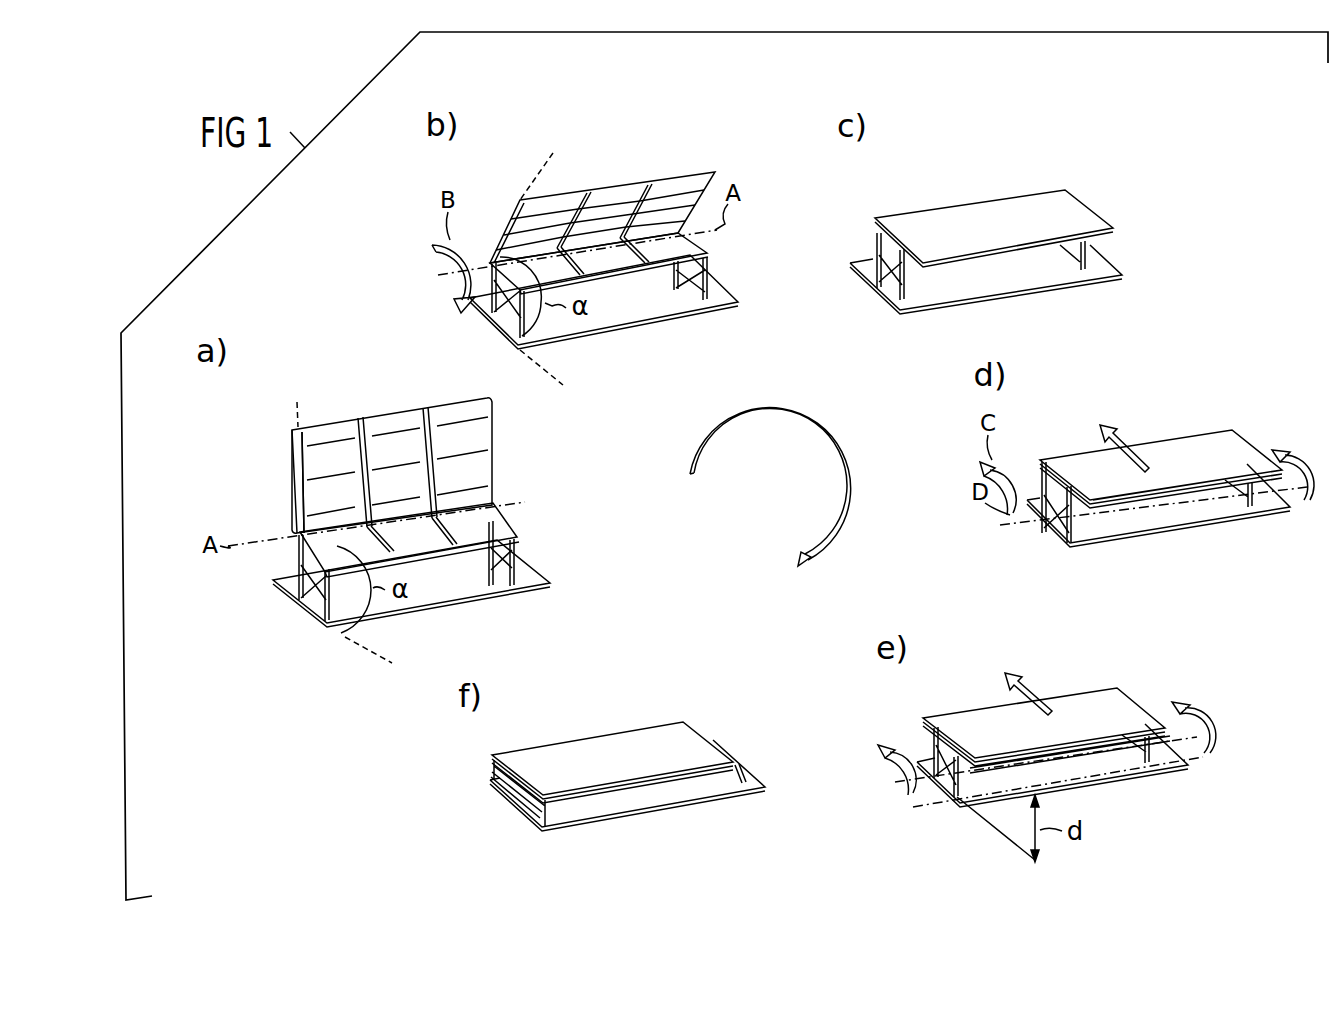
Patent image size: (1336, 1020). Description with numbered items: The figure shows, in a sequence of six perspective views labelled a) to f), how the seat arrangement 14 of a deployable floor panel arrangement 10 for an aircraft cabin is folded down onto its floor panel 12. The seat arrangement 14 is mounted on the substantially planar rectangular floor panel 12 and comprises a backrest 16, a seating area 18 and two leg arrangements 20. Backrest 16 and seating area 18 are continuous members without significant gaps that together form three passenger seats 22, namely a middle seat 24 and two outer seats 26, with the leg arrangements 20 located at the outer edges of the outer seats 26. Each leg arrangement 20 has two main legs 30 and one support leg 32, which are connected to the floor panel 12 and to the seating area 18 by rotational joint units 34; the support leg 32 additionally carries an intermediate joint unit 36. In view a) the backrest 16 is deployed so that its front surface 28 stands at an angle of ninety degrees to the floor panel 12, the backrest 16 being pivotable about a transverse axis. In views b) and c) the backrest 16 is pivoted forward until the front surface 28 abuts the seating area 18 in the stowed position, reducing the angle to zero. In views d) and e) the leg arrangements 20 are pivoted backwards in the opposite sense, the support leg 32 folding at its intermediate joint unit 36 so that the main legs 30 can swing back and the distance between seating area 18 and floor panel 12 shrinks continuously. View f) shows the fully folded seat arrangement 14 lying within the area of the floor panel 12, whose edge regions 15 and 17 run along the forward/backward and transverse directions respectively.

The deployable floor panel arrangement 10 is at (510, 477).
The floor panel 12 is at (540, 576).
The seat arrangement 14 is at (503, 427).
The edge region 15 is at (745, 774).
The backrest 16 is at (322, 412).
The edge region 17 is at (493, 771).
The seating area 18 is at (625, 262).
The leg arrangement 20 is at (272, 591).
The passenger seat 22 is at (375, 402).
The middle seat 24 is at (408, 447).
The outer seat 26 is at (352, 425).
The front surface 28 is at (298, 466).
The main leg 30 is at (292, 598).
The support leg 32 is at (312, 614).
The rotational joint unit 34 is at (310, 536).
The intermediate joint unit 36 is at (518, 546).